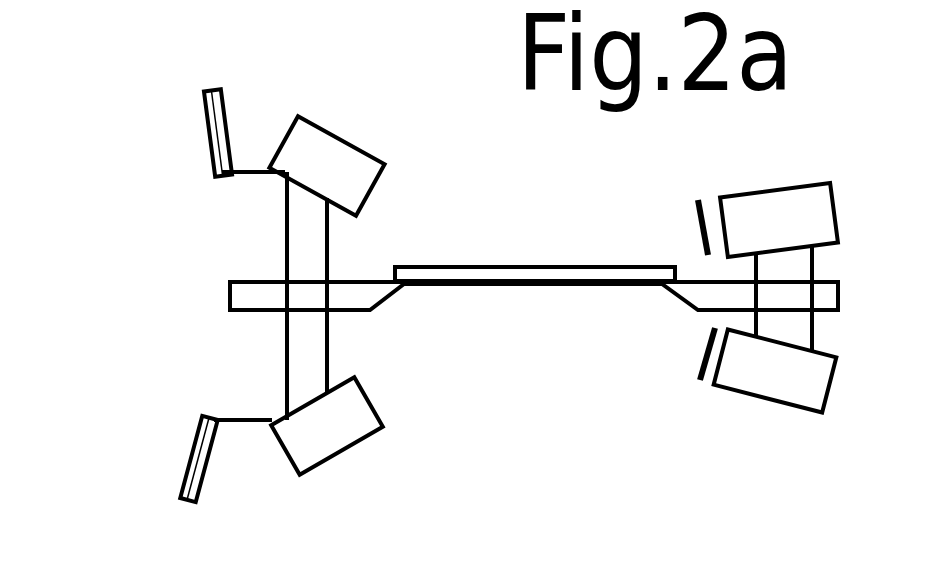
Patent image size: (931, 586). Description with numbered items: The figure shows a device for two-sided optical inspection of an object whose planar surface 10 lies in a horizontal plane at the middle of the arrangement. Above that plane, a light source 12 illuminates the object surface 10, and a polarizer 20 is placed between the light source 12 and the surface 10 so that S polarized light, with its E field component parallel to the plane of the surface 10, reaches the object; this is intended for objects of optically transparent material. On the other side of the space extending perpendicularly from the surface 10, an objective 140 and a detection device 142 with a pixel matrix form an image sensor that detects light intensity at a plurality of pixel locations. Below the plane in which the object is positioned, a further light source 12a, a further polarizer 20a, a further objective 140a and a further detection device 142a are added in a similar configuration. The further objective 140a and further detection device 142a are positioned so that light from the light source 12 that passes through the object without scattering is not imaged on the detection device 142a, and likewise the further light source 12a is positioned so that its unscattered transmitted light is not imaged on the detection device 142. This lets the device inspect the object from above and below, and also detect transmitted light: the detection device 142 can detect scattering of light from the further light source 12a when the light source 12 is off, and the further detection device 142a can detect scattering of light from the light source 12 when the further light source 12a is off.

The planar surface 10 is at (518, 265).
The light source 12 is at (793, 187).
The further light source 12a is at (758, 398).
The polarizer 20 is at (700, 230).
The further polarizer 20a is at (700, 367).
The objective 140 is at (337, 138).
The further objective 140a is at (358, 432).
The detection device 142 is at (205, 122).
The further detection device 142a is at (187, 463).